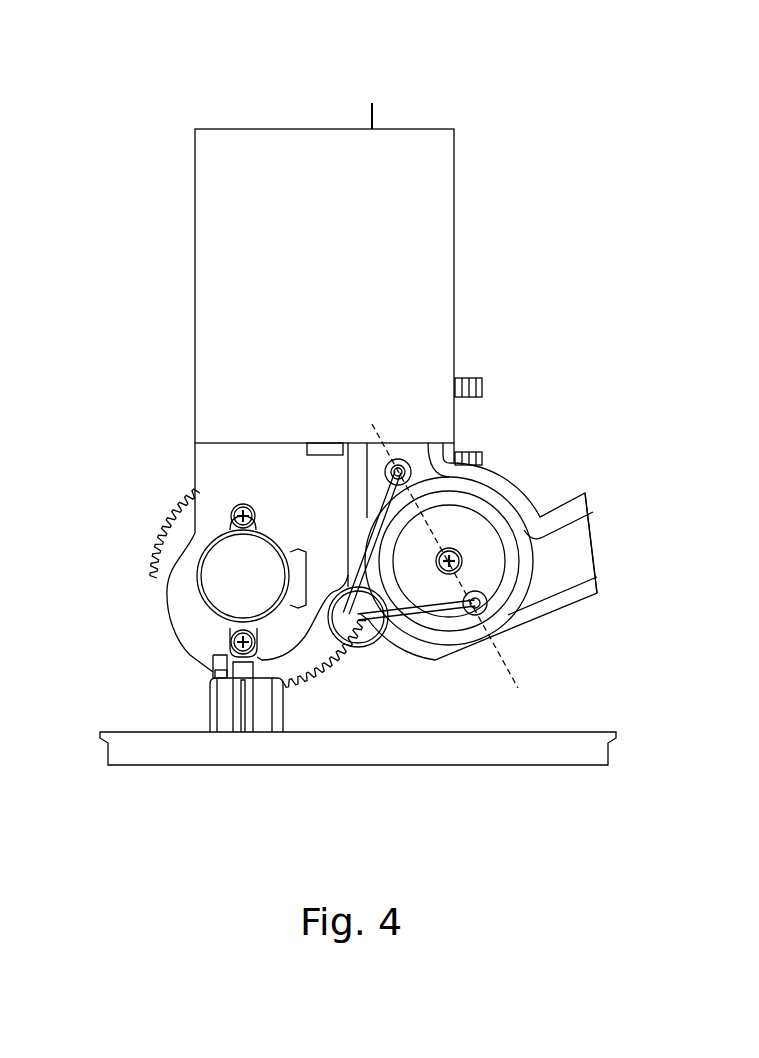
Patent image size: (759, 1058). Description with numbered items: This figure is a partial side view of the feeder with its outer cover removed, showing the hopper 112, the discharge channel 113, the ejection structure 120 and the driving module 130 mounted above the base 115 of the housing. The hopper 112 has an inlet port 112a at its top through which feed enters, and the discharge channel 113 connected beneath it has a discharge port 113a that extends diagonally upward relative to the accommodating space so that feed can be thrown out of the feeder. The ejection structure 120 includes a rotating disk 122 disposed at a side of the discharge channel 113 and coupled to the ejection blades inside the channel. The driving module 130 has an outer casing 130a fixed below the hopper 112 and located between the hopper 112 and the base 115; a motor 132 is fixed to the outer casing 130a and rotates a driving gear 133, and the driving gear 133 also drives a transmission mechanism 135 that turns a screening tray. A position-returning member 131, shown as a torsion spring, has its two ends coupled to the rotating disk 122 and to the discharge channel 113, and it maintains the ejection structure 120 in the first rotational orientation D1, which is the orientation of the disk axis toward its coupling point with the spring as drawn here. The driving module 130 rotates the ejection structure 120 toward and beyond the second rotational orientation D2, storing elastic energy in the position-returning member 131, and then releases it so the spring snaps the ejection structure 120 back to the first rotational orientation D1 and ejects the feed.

The hopper 112 is at (454, 189).
The inlet port 112a is at (372, 103).
The discharge channel 113 is at (505, 490).
The discharge port 113a is at (617, 540).
The base 115 is at (612, 748).
The ejection structure 120 is at (557, 563).
The rotating disk 122 is at (500, 597).
The driving module 130 is at (193, 585).
The outer casing 130a is at (200, 452).
The position-returning member 131 is at (372, 652).
The motor 132 is at (205, 578).
The driving gear 133 is at (180, 619).
The transmission mechanism 135 is at (505, 370).
The first rotational orientation D1 is at (504, 647).
The second rotational orientation D2 is at (430, 538).